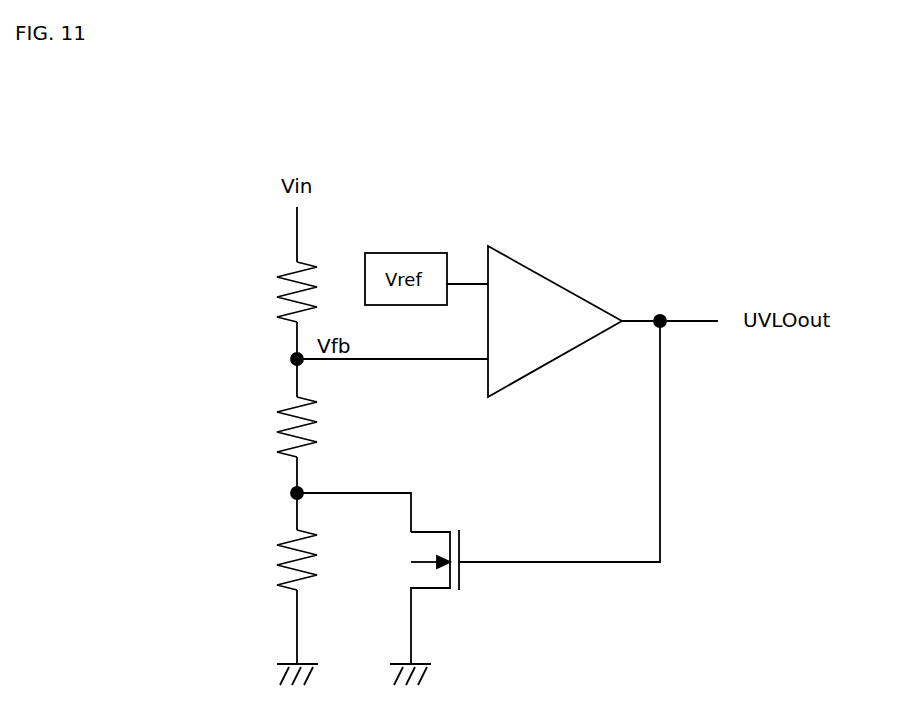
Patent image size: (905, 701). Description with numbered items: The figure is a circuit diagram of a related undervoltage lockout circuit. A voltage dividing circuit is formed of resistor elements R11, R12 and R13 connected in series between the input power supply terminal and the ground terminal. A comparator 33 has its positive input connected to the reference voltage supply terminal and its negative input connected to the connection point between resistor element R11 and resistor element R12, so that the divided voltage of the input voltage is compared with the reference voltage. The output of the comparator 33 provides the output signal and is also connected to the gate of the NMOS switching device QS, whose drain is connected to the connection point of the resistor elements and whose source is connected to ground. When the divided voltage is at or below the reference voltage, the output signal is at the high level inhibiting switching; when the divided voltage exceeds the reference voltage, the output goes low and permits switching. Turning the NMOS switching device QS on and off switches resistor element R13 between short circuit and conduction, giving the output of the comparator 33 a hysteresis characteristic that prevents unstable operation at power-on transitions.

The comparator 33 is at (540, 372).
The resistor element R11 is at (269, 292).
The resistor element R12 is at (269, 427).
The resistor element R13 is at (269, 560).
The NMOS switching device QS is at (435, 583).